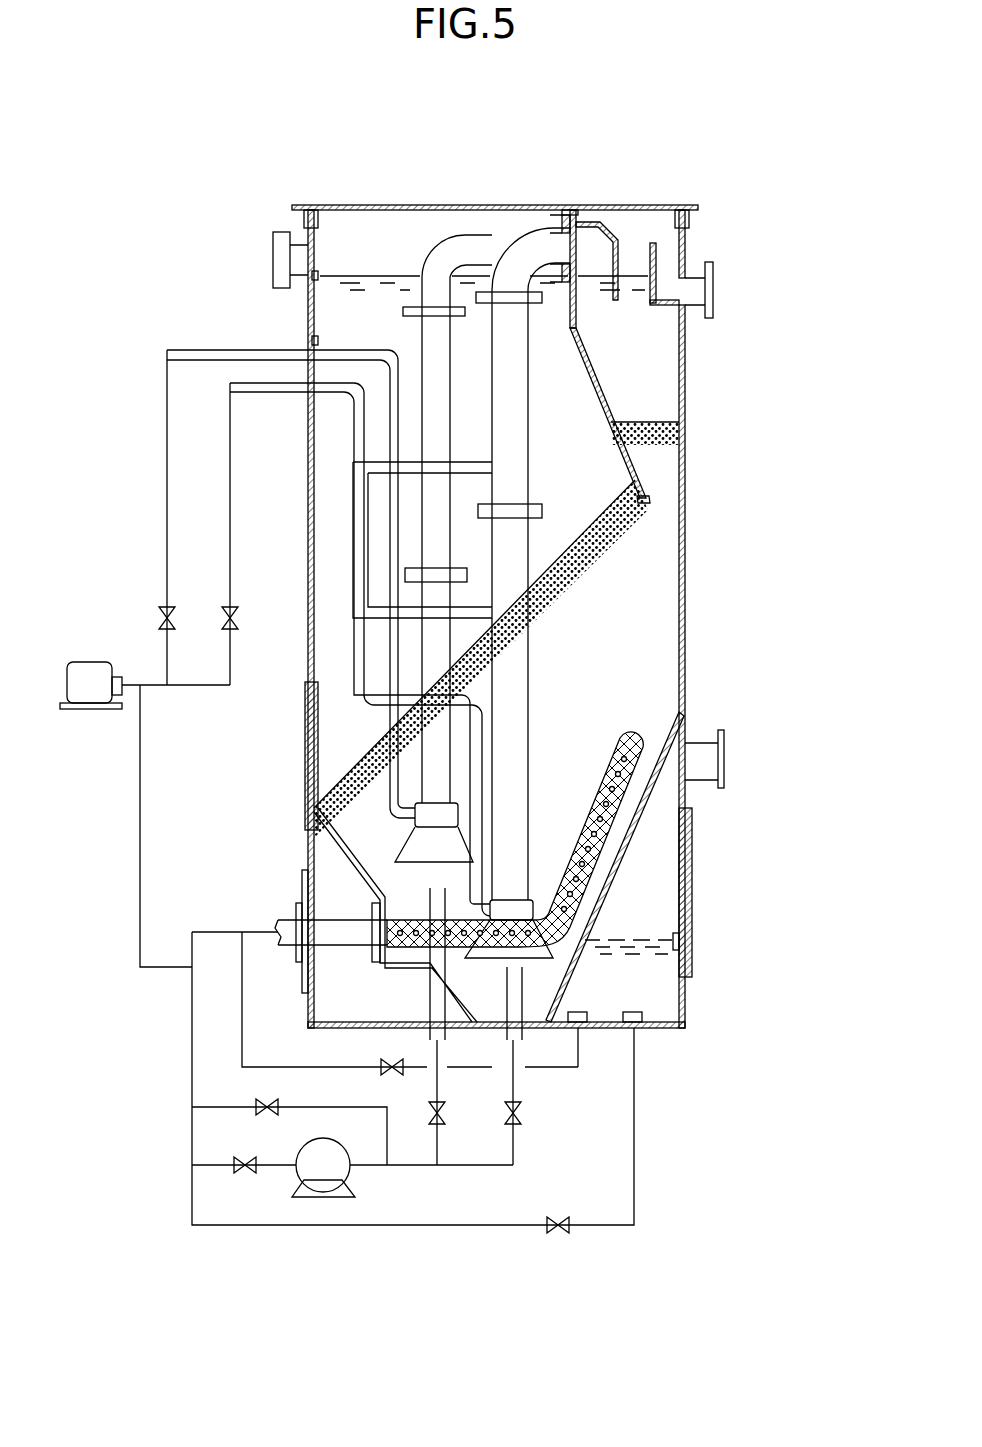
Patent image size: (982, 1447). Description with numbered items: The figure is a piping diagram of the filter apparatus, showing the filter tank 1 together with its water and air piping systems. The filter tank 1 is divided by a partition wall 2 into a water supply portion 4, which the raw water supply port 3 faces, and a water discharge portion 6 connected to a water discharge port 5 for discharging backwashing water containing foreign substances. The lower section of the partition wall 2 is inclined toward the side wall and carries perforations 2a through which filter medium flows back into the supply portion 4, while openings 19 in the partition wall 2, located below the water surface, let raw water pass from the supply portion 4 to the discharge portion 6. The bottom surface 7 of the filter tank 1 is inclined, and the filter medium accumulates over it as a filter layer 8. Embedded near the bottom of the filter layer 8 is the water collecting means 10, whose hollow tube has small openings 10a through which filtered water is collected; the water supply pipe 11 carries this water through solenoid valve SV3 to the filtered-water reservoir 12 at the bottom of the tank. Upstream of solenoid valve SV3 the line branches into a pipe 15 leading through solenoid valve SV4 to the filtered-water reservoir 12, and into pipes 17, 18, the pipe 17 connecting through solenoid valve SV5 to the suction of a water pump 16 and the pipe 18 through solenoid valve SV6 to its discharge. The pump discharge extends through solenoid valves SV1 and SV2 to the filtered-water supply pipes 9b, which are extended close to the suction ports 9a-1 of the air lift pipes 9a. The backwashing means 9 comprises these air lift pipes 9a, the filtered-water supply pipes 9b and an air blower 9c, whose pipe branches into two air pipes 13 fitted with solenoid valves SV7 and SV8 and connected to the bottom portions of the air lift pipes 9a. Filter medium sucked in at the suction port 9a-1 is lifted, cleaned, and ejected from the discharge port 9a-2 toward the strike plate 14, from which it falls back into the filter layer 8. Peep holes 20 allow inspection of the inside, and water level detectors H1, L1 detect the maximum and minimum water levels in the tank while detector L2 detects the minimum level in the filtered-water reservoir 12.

The filter tank 1 is at (690, 432).
The partition wall 2 is at (595, 363).
The perforations 2a is at (636, 480).
The raw water supply port 3 is at (287, 258).
The water supply portion 4 is at (380, 240).
The water discharge port 5 is at (702, 290).
The water discharge portion 6 is at (634, 255).
The bottom surface 7 is at (662, 733).
The filter layer 8 is at (688, 600).
The backwashing means 9 is at (165, 806).
The air lift pipe 9a is at (502, 793).
The suction port 9a-1 is at (443, 863).
The discharge port 9a-2 is at (578, 245).
The filtered-water supply pipe 9b is at (432, 890).
The air blower 9c is at (92, 688).
The water collecting means 10 is at (618, 743).
The small openings 10a is at (597, 800).
The water supply pipe 11 is at (545, 1068).
The filtered-water reservoir 12 is at (665, 837).
The air pipe 13 is at (232, 470).
The strike plate 14 is at (614, 258).
The pipe 15 is at (427, 1228).
The water pump 16 is at (326, 1178).
The pipe 17 is at (213, 1170).
The pipe 18 is at (220, 1107).
The openings 19 is at (592, 348).
The peep hole 20 is at (692, 887).
The water level detector H1 is at (305, 278).
The water level detector L1 is at (307, 340).
The water level detector L2 is at (676, 932).
The solenoid valve SV1 is at (447, 1107).
The solenoid valve SV2 is at (523, 1108).
The solenoid valve SV3 is at (395, 1078).
The solenoid valve SV4 is at (565, 1235).
The solenoid valve SV5 is at (235, 1162).
The solenoid valve SV6 is at (255, 1100).
The solenoid valve SV7 is at (158, 619).
The solenoid valve SV8 is at (240, 623).